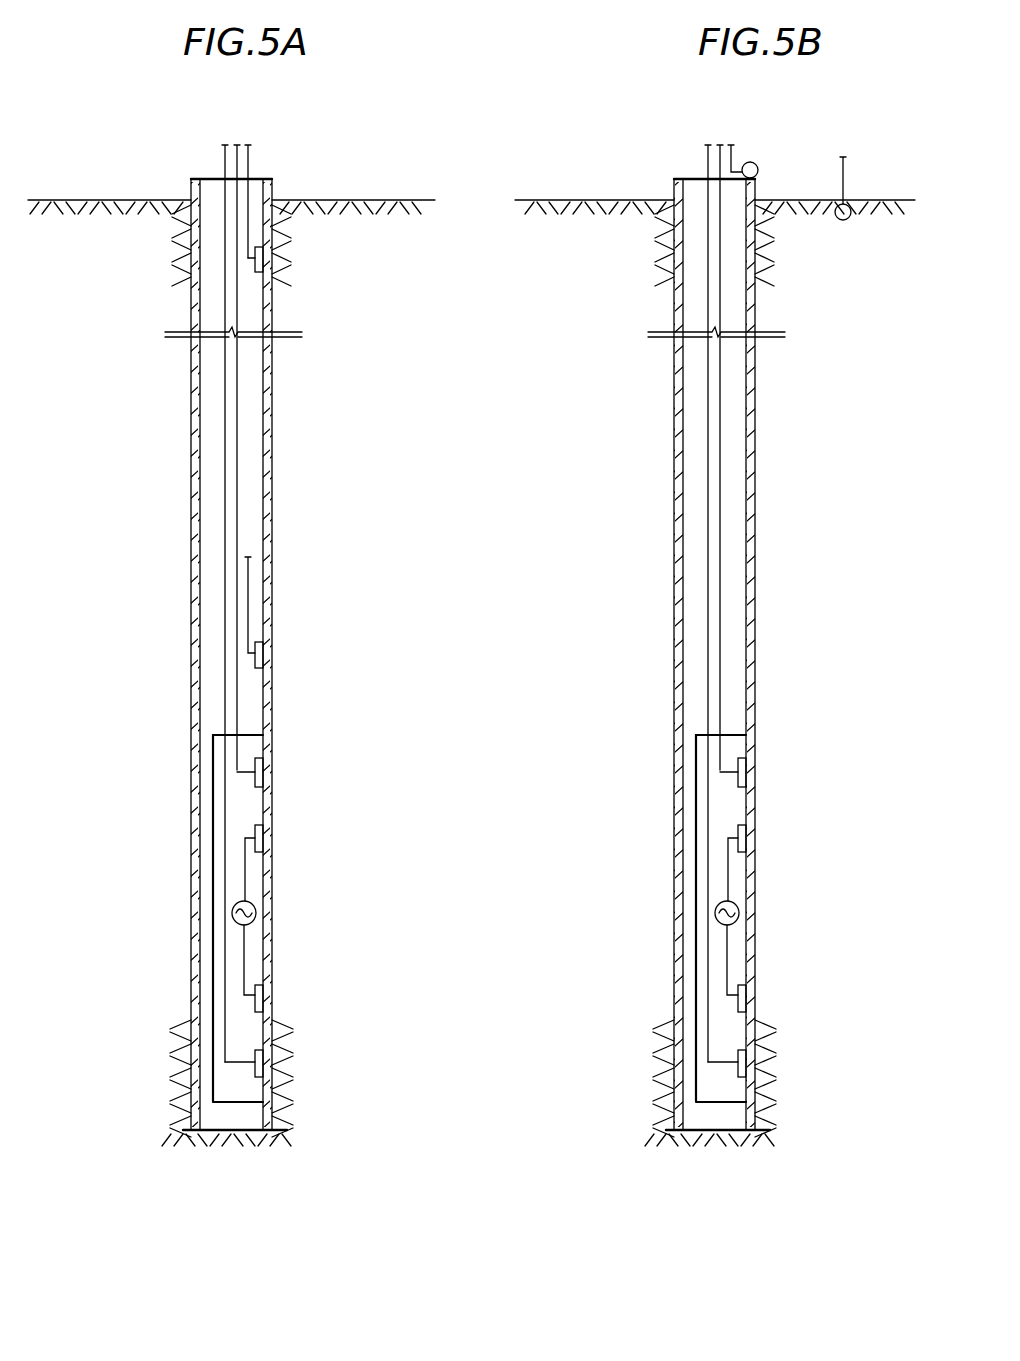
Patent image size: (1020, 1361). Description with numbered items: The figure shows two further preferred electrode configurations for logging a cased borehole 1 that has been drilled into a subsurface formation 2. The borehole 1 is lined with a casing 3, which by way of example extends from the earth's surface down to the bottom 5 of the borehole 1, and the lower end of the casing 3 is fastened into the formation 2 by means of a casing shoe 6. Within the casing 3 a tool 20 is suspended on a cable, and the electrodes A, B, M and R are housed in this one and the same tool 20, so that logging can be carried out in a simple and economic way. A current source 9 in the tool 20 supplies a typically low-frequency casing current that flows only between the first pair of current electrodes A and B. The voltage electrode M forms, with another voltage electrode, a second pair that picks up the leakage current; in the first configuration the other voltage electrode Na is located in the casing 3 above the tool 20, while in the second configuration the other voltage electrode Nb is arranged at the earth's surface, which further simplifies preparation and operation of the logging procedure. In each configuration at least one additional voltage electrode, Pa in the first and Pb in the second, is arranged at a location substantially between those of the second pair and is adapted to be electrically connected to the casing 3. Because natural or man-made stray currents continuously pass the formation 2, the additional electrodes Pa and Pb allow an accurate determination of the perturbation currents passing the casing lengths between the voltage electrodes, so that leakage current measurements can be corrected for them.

In FIG. 5A, the borehole 1 is at (253, 457).
In FIG. 5B, the borehole 1 is at (735, 498).
In FIG. 5A, the subsurface formation 2 is at (157, 287).
In FIG. 5B, the subsurface formation 2 is at (642, 287).
In FIG. 5A, the casing 3 is at (276, 382).
In FIG. 5B, the casing 3 is at (759, 396).
In FIG. 5A, the bottom of the borehole 5 is at (232, 1118).
In FIG. 5B, the bottom of the borehole 5 is at (718, 1120).
In FIG. 5A, the casing shoe 6 is at (280, 1130).
In FIG. 5B, the casing shoe 6 is at (763, 1130).
In FIG. 5A, the current source 9 is at (257, 915).
In FIG. 5B, the current source 9 is at (740, 913).
In FIG. 5A, the tool 20 is at (252, 744).
In FIG. 5B, the tool 20 is at (735, 744).
In FIG. 5A, the other voltage electrode Na is at (285, 261).
In FIG. 5A, the additional voltage electrode Pa is at (277, 612).
In FIG. 5B, the additional voltage electrode Pb is at (767, 155).
In FIG. 5B, the other voltage electrode Nb is at (851, 206).
In FIG. 5A, the voltage electrode M is at (269, 774).
In FIG. 5B, the voltage electrode M is at (752, 774).
In FIG. 5A, the current electrode A is at (271, 863).
In FIG. 5B, the current electrode A is at (754, 863).
In FIG. 5A, the current electrode B is at (271, 969).
In FIG. 5B, the current electrode B is at (754, 969).
In FIG. 5A, the electrode R is at (262, 1063).
In FIG. 5B, the electrode R is at (745, 1063).